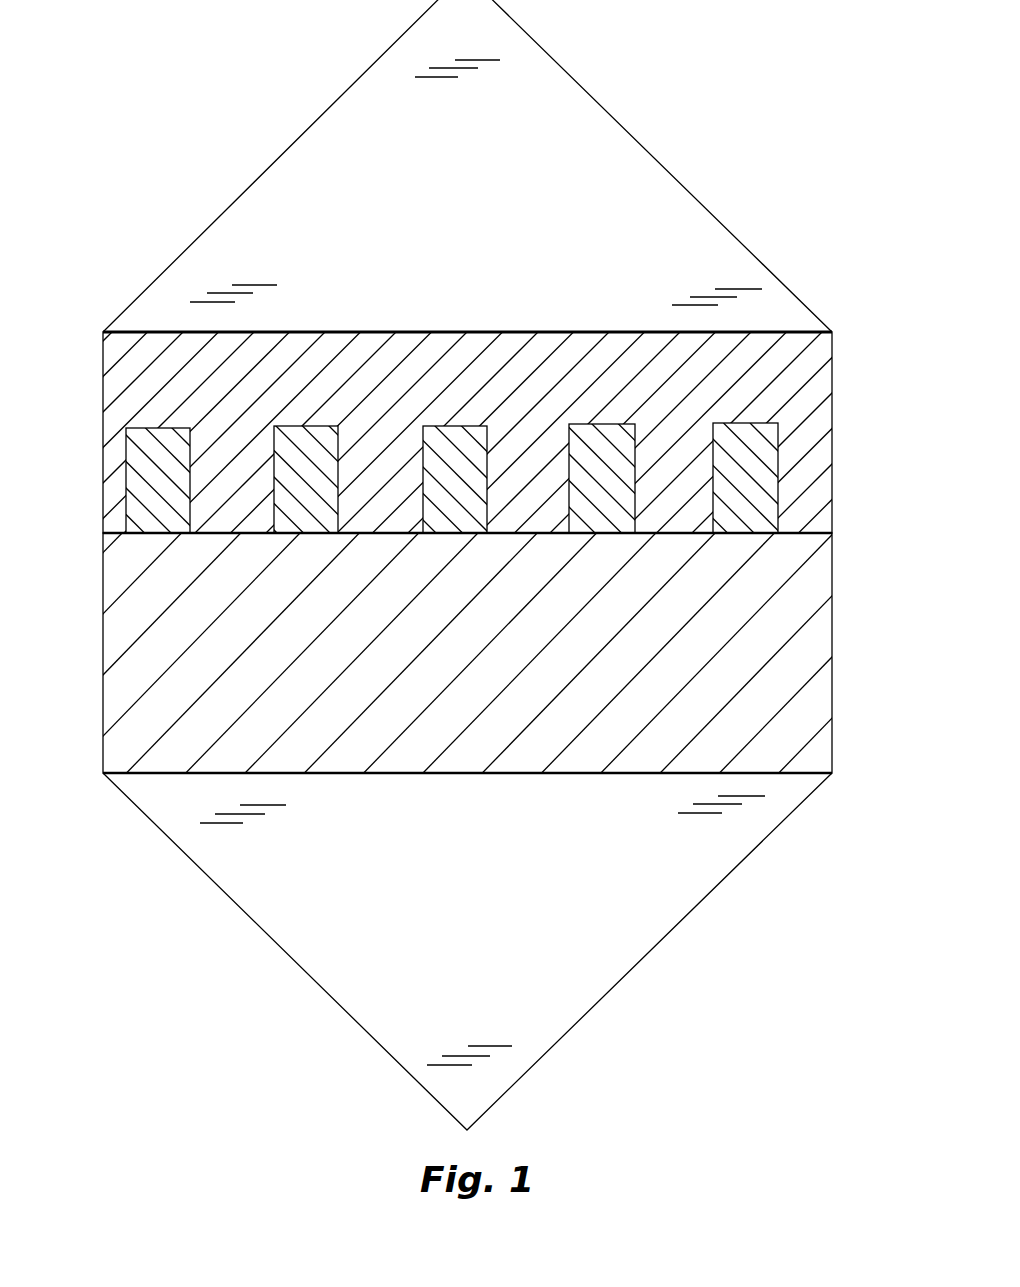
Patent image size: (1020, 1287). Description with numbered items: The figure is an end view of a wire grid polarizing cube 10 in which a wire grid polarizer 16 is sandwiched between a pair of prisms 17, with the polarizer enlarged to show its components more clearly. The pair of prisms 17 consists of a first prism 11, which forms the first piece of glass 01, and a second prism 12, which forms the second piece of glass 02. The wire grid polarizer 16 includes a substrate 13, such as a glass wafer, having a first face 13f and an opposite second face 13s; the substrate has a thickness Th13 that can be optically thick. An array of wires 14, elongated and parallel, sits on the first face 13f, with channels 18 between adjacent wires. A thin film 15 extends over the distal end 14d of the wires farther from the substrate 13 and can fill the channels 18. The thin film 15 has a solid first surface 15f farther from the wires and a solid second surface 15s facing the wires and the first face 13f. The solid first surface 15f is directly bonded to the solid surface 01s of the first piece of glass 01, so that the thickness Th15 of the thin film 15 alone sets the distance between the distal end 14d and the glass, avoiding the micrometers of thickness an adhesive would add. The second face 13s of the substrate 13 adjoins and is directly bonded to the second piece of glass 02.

The wire grid polarizing cube 10 is at (148, 138).
The first prism 11 is at (481, 228).
The first piece of glass 01 is at (285, 228).
The solid surface of first piece of glass 01s is at (330, 331).
The second prism 12 is at (475, 918).
The second piece of glass 02 is at (306, 918).
The substrate 13 is at (496, 655).
The first face of substrate 13f is at (817, 534).
The second face of substrate 13s is at (703, 771).
The array of wires 14 is at (759, 495).
The distal end of array of wires 14d is at (738, 423).
The thin film 15 is at (471, 391).
The solid second surface of thin film 15s is at (160, 427).
The solid first surface of thin film 15f is at (307, 336).
The wire grid polarizer 16 is at (858, 510).
The pair of prisms 17 is at (160, 810).
The channels 18 is at (452, 483).
The thickness of thin film Th15 is at (600, 333).
The thickness of substrate Th13 is at (233, 533).